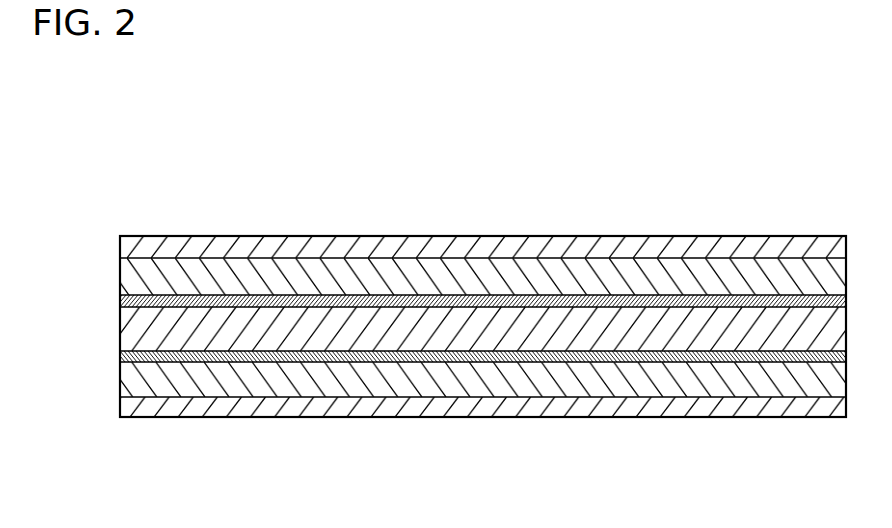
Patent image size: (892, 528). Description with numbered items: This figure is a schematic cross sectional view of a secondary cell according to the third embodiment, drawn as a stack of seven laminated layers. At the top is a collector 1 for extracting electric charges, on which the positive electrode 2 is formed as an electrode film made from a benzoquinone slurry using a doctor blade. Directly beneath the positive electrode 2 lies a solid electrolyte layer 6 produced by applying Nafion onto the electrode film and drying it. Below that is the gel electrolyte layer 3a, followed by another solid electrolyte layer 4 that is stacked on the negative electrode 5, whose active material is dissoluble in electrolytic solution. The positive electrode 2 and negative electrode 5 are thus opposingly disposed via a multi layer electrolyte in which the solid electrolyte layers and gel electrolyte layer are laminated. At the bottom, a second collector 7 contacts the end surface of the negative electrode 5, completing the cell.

The collector 1 is at (160, 247).
The positive electrode 2 is at (262, 267).
The solid electrolyte layer 6 is at (740, 302).
The gel electrolyte layer 3a is at (357, 325).
The solid electrolyte layer 4 is at (490, 343).
The negative electrode 5 is at (605, 380).
The collector 7 is at (510, 408).